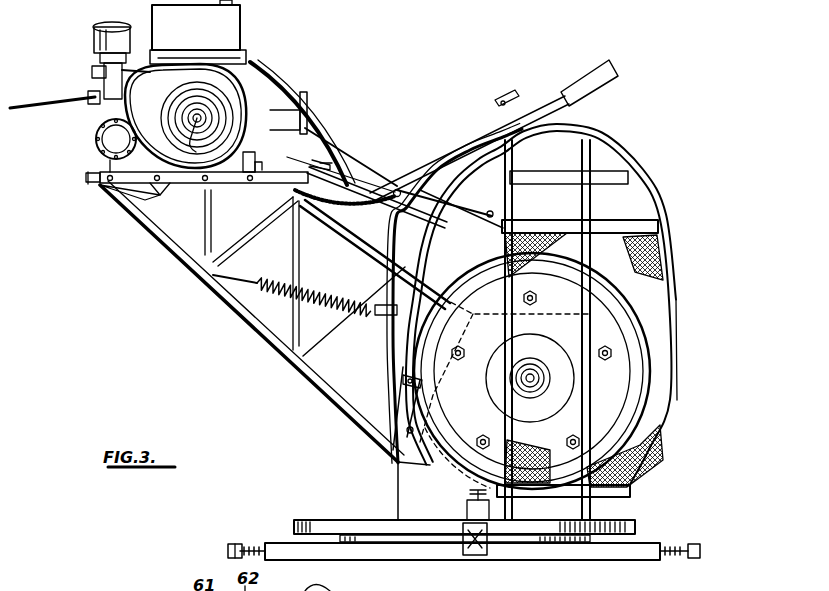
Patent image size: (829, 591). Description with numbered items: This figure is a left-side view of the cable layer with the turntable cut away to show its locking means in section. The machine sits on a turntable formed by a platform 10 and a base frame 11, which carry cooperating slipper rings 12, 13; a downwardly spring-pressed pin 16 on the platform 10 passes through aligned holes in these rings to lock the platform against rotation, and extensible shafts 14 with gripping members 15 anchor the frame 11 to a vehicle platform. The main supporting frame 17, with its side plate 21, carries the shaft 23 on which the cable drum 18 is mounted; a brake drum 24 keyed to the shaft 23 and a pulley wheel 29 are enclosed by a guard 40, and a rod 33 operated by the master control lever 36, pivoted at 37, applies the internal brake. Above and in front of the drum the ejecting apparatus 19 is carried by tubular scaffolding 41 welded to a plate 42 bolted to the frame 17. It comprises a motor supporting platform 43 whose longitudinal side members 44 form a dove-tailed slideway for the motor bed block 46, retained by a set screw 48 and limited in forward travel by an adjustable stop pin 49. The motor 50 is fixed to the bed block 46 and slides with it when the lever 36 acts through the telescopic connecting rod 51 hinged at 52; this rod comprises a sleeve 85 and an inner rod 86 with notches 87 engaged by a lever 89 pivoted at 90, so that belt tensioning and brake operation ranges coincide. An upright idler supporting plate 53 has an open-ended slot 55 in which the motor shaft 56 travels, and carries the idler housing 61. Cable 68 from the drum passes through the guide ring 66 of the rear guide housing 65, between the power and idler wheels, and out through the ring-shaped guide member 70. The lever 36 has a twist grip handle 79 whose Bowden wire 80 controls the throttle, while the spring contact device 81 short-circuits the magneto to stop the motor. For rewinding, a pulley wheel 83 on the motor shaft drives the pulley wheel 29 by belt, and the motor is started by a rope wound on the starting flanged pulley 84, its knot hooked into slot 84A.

The platform 10 is at (348, 521).
The base frame 11 is at (593, 561).
The slipper ring 12 is at (420, 540).
The slipper ring 13 is at (470, 556).
The extensible shaft 14 is at (256, 545).
The gripping member 15 is at (226, 549).
The spring-pressed pin 16 is at (466, 493).
The main supporting frame 17 is at (396, 465).
The cable drum 18 is at (640, 295).
The ejecting apparatus 19 is at (100, 156).
The side plate 21 is at (397, 492).
The shaft 23 is at (523, 384).
The brake drum 24 is at (560, 376).
The pulley wheel 29 is at (640, 341).
The rod 33 is at (425, 382).
The master control lever 36 is at (386, 340).
The pivot 37 is at (403, 430).
The guard 40 is at (640, 252).
The scaffolding 41 is at (262, 335).
The plate 42 is at (410, 456).
The motor supporting platform 43 is at (180, 184).
The longitudinal side member 44 is at (245, 184).
The motor bed block 46 is at (204, 166).
The set screw 48 is at (140, 205).
The adjustable stop pin 49 is at (88, 178).
The motor 50 is at (222, 188).
The telescopic connecting rod 51 is at (430, 165).
The hinge connection 52 is at (260, 151).
The idler supporting plate 53 is at (315, 128).
The open-ended slot 55 is at (300, 95).
The motor shaft 56 is at (196, 141).
The housing 61 is at (147, 45).
The rear guide housing 65 is at (279, 73).
The guide ring 66 is at (310, 112).
The cable 68 is at (48, 105).
The guide member 70 is at (92, 105).
The twist grip handle 79 is at (598, 90).
The Bowden wire 80 is at (360, 225).
The spring contact device 81 is at (505, 100).
The pulley wheel 83 is at (204, 108).
The starting flanged pulley 84 is at (182, 112).
The slot 84A is at (186, 108).
The sleeve 85 is at (338, 208).
The rod 86 is at (256, 273).
The notch 87 is at (300, 160).
The lever 89 is at (380, 170).
The pivot 90 is at (335, 162).